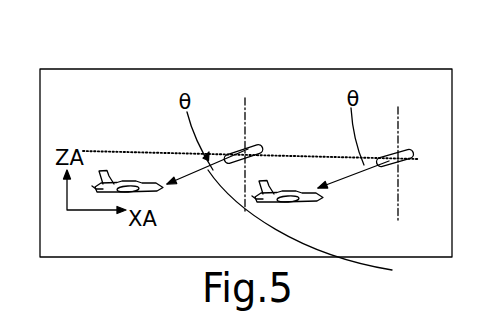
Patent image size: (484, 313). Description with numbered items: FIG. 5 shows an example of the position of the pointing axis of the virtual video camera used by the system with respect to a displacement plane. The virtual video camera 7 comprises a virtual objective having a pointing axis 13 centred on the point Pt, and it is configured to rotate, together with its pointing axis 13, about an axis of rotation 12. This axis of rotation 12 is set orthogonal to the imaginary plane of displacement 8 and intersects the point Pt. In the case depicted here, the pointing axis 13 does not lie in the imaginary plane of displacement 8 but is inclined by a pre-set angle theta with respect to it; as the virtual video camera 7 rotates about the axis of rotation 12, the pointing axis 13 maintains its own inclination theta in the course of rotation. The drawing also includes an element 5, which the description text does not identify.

The aircraft 5 is at (118, 182).
The virtual video camera 7 is at (243, 150).
The imaginary plane of displacement 8 is at (388, 270).
The axis of rotation 12 is at (245, 112).
The pointing axis 13 is at (208, 170).